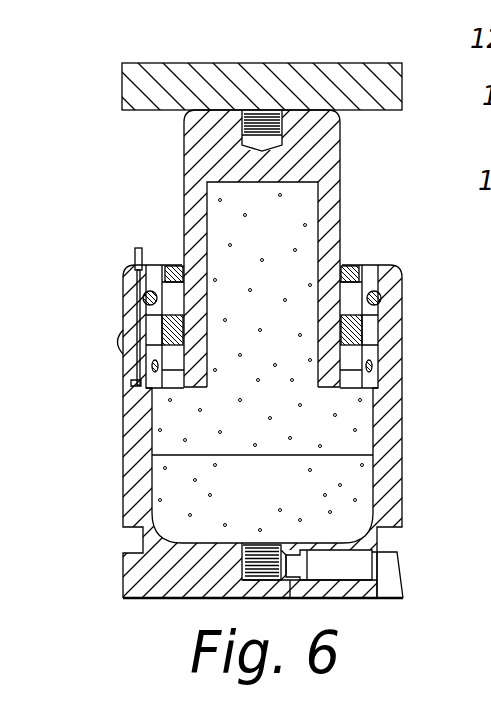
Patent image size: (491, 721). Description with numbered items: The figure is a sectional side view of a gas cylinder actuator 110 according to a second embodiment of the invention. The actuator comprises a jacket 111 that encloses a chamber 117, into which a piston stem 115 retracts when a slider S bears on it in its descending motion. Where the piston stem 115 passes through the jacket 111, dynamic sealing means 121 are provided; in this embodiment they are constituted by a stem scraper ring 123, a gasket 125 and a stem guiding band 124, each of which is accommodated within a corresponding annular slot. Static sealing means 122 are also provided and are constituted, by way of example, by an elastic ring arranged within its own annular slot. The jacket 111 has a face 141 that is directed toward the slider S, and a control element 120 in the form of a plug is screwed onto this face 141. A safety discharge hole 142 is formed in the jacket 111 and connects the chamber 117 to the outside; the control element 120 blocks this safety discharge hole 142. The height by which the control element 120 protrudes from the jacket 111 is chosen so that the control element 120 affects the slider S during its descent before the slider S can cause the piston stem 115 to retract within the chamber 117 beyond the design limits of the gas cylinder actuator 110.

The slider S is at (265, 72).
The gas cylinder actuator 110 is at (130, 180).
The jacket 111 is at (135, 443).
The piston stem 115 is at (333, 147).
The chamber 117 is at (290, 504).
The control element 120 is at (136, 254).
The dynamic sealing means 121 is at (350, 288).
The static sealing means 122 is at (377, 366).
The stem scraper ring 123 is at (360, 286).
The stem guiding band 124 is at (345, 298).
The gasket 125 is at (355, 328).
The face of the jacket 141 is at (490, 640).
The safety discharge hole 142 is at (130, 382).